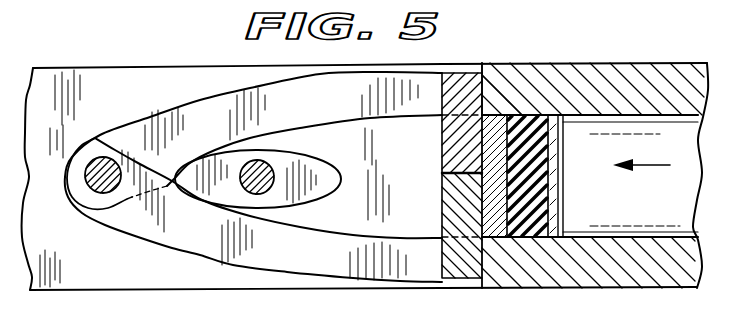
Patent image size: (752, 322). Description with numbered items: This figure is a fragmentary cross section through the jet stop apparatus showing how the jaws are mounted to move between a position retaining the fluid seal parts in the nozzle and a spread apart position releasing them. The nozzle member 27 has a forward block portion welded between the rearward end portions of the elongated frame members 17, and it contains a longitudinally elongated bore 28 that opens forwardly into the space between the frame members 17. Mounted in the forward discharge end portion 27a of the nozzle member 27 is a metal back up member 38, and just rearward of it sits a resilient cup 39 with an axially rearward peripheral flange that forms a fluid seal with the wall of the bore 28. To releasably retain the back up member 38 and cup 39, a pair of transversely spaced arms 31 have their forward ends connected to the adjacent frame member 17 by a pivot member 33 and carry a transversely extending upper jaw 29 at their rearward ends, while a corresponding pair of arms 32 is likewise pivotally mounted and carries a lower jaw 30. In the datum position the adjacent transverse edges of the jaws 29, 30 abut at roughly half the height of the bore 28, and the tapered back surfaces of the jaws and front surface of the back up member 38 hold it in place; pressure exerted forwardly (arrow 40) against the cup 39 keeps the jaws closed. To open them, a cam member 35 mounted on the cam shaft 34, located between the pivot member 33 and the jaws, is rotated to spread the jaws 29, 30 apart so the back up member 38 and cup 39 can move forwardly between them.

The frame member 17 is at (50, 78).
The nozzle member 27 is at (597, 72).
The forward discharge end portion 27a is at (490, 78).
The bore 28 is at (690, 228).
The upper jaw 29 is at (448, 133).
The lower jaw 30 is at (455, 202).
The arm 31 is at (213, 106).
The arm 32 is at (252, 257).
The pivot member 33 is at (100, 190).
The cam shaft 34 is at (265, 165).
The cam member 35 is at (305, 196).
The back up member 38 is at (548, 213).
The resilient cup 39 is at (538, 192).
The arrow 40 is at (646, 168).